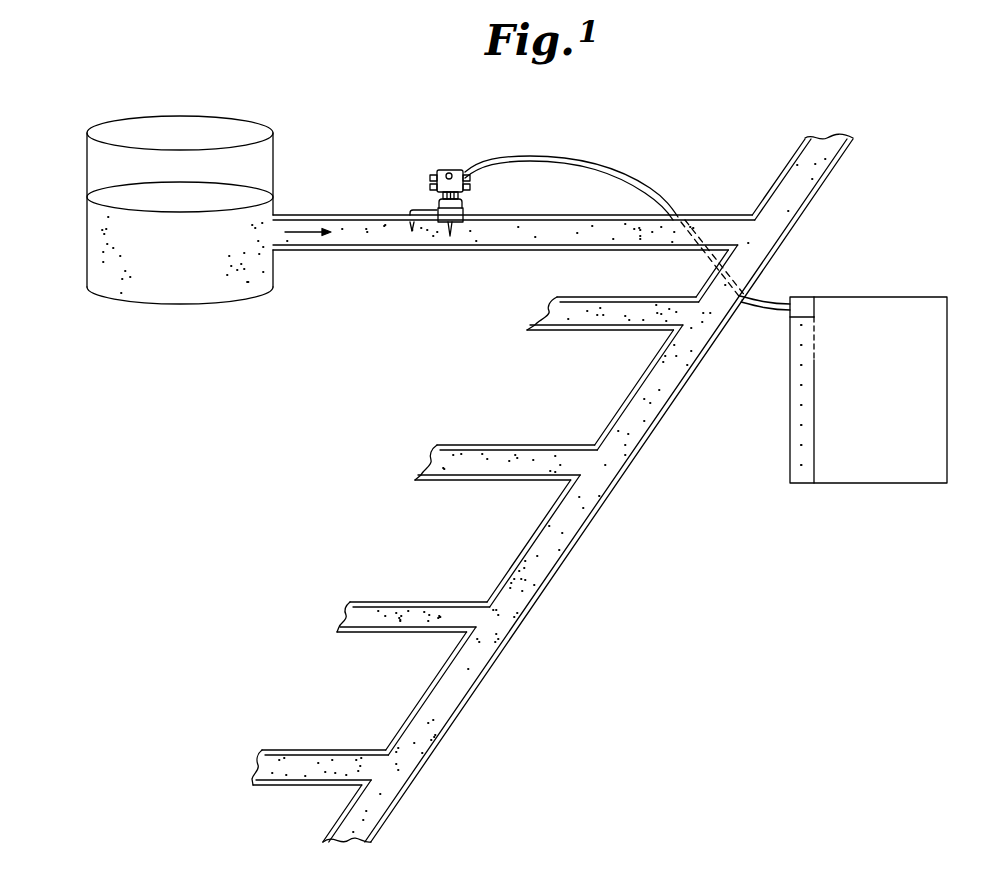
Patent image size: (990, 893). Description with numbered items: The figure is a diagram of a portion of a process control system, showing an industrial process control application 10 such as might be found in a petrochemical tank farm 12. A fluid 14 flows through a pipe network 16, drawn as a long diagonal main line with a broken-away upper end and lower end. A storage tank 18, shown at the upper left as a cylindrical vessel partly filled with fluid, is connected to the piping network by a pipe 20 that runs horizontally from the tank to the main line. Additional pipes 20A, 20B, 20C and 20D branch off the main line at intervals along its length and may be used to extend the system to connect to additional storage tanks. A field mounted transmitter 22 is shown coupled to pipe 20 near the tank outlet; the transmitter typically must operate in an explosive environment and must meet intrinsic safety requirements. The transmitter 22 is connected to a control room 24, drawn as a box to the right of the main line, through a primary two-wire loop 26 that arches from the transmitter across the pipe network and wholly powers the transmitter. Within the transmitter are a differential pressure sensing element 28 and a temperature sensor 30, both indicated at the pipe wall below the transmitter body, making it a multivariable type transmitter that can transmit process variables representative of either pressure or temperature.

The industrial process control application 10 is at (886, 128).
The petrochemical tank farm 12 is at (258, 473).
The fluid 14 is at (766, 256).
The pipe network 16 is at (813, 208).
The storage tank 18 is at (183, 272).
The pipe 20 is at (503, 252).
The additional pipe 20A is at (560, 333).
The additional pipe 20B is at (430, 482).
The additional pipe 20C is at (350, 634).
The additional pipe 20D is at (282, 788).
The field mounted transmitter 22 is at (436, 172).
The control room 24 is at (883, 408).
The primary two-wire loop 26 is at (618, 167).
The differential pressure sensing element 28 is at (450, 230).
The temperature sensor 30 is at (413, 230).